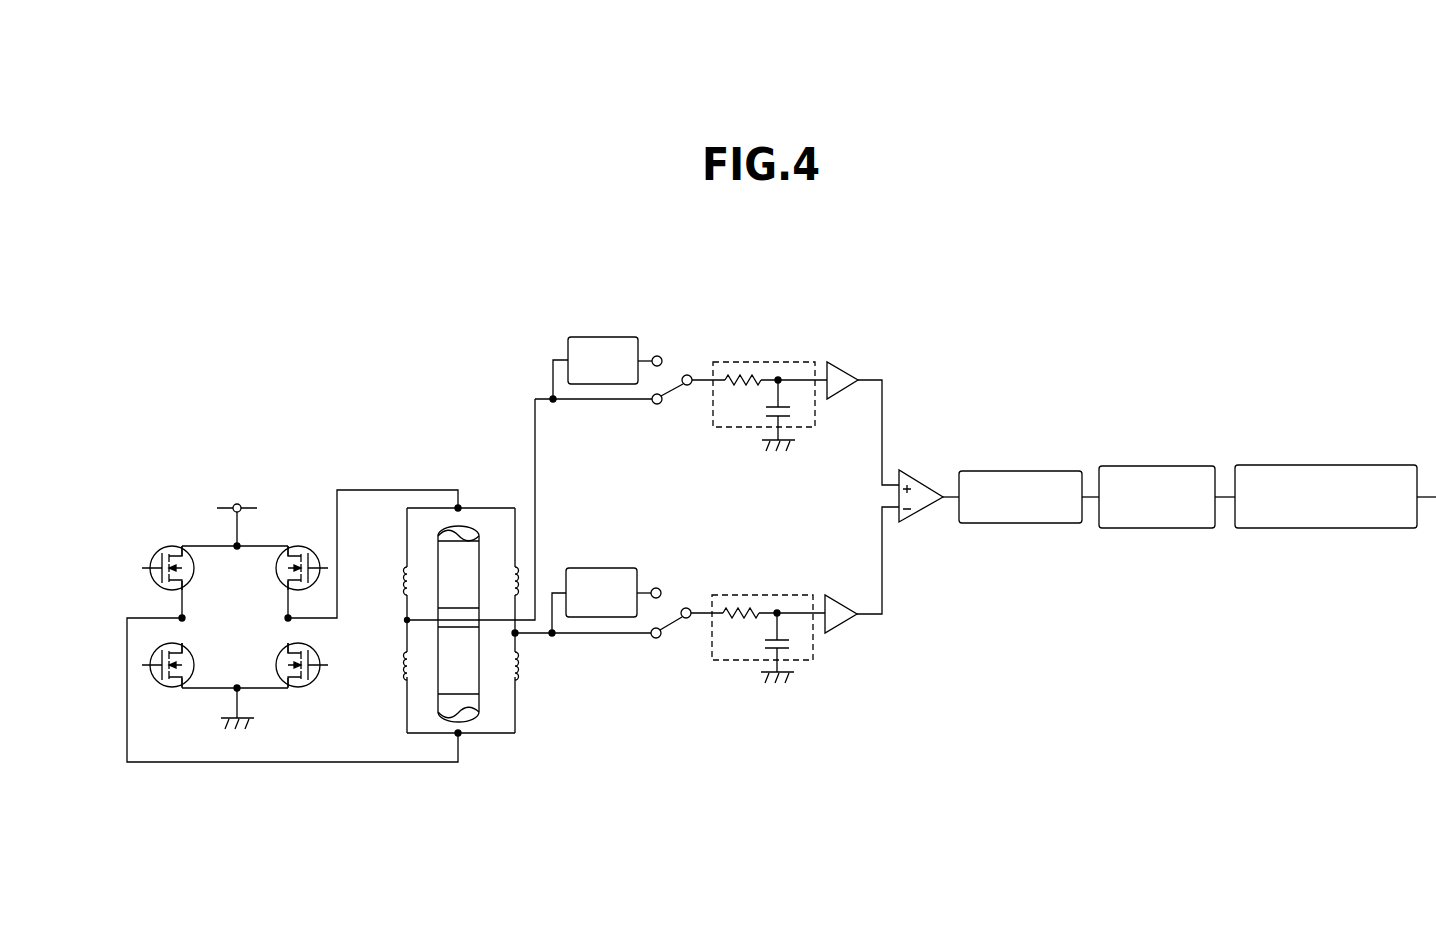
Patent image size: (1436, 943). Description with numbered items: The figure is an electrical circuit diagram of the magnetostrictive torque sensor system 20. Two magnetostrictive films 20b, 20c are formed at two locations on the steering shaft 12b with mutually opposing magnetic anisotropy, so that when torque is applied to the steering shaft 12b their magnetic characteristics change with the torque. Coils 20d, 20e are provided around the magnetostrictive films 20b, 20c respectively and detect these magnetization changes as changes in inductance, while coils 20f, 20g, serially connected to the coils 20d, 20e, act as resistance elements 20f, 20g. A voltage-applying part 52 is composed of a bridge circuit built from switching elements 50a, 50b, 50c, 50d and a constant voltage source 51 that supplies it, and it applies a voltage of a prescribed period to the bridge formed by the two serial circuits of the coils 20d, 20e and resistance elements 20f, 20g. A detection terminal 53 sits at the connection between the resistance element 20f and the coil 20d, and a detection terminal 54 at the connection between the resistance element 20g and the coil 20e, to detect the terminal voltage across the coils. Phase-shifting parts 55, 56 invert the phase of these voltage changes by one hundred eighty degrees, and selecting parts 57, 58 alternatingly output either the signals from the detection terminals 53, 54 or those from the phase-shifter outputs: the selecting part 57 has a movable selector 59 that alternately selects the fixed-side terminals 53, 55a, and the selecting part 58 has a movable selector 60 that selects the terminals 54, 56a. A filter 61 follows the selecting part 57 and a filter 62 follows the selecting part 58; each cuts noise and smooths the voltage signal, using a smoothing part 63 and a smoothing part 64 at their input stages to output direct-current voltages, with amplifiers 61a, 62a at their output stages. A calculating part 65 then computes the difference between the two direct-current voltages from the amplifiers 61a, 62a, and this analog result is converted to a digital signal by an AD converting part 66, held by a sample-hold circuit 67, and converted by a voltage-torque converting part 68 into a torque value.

The magnetostrictive torque sensor system 20 is at (563, 262).
The steering shaft 12b is at (473, 527).
The magnetostrictive film 20b is at (481, 556).
The magnetostrictive film 20c is at (481, 684).
The coil 20d is at (403, 663).
The coil 20e is at (519, 665).
The resistance element 20f is at (402, 580).
The resistance element 20g is at (518, 582).
The switching element 50a is at (165, 547).
The switching element 50b is at (165, 688).
The switching element 50c is at (300, 547).
The switching element 50d is at (302, 688).
The constant voltage source 51 is at (237, 503).
The voltage-applying part 52 is at (196, 486).
The detection terminal 53 is at (655, 638).
The detection terminal 54 is at (657, 405).
The phase-shifting part 55 is at (615, 568).
The detection terminal 55a is at (656, 588).
The phase-shifting part 56 is at (615, 336).
The detection terminal 56a is at (658, 356).
The selecting part 57 is at (669, 699).
The selecting part 58 is at (691, 354).
The movable selector 59 is at (669, 621).
The movable selector 60 is at (671, 392).
The filter 61 is at (826, 580).
The amplifier 61a is at (842, 628).
The filter 62 is at (826, 349).
The amplifier 62a is at (860, 349).
The smoothing part 63 is at (757, 595).
The smoothing part 64 is at (757, 362).
The calculating part 65 is at (922, 515).
The AD converting part 66 is at (1065, 471).
The sample-hold circuit 67 is at (1188, 466).
The voltage-torque converting part 68 is at (1388, 465).